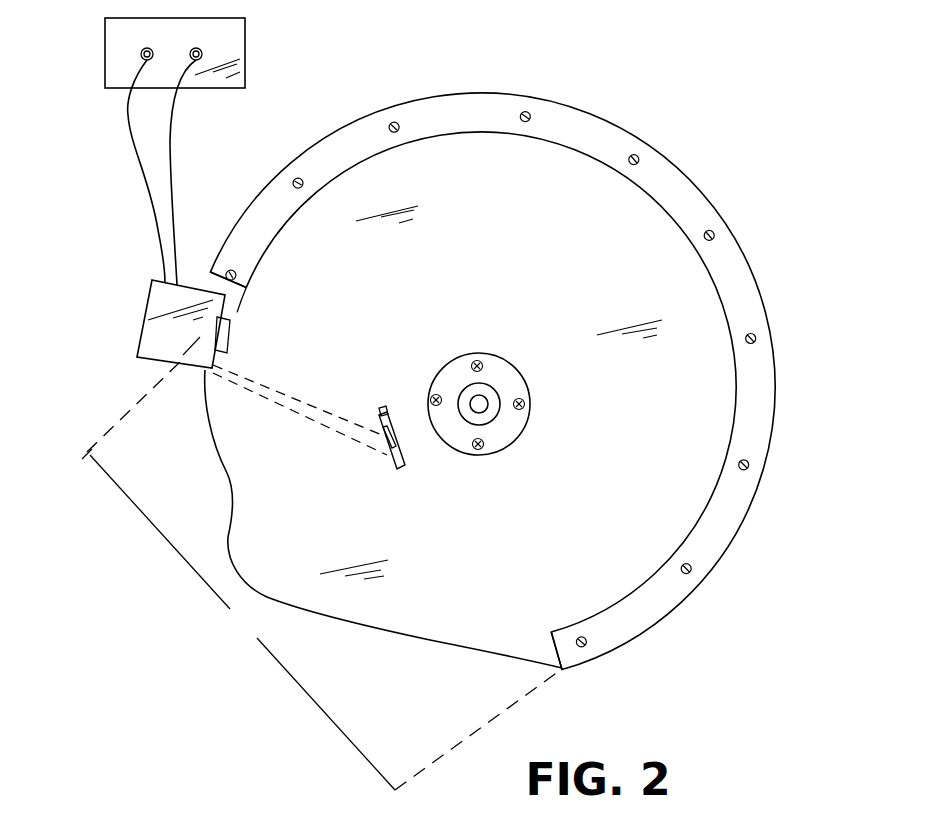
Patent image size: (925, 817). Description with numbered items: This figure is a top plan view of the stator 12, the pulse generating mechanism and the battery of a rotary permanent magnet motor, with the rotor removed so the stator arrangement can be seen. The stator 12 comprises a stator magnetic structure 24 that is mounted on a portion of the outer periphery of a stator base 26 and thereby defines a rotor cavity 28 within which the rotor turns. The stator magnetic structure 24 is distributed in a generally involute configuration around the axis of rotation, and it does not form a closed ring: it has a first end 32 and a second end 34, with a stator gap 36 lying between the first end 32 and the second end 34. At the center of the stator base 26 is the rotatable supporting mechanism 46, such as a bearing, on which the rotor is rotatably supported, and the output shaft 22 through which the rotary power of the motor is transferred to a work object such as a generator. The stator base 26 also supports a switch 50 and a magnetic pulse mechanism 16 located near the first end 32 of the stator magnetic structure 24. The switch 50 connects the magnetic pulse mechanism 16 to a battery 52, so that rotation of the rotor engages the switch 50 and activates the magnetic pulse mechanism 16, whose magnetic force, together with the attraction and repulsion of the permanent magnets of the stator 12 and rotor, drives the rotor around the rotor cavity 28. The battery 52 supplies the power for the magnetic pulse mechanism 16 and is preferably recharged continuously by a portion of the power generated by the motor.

The stator 12 is at (697, 200).
The magnetic pulse mechanism 16 is at (167, 338).
The output shaft 22 is at (481, 403).
The stator magnetic structure 24 is at (468, 118).
The stator base 26 is at (670, 482).
The rotor cavity 28 is at (433, 187).
The first end 32 is at (208, 262).
The second end 34 is at (587, 660).
The stator gap 36 is at (322, 576).
The rotatable supporting mechanism 46 is at (530, 410).
The switch 50 is at (381, 410).
The battery 52 is at (123, 40).